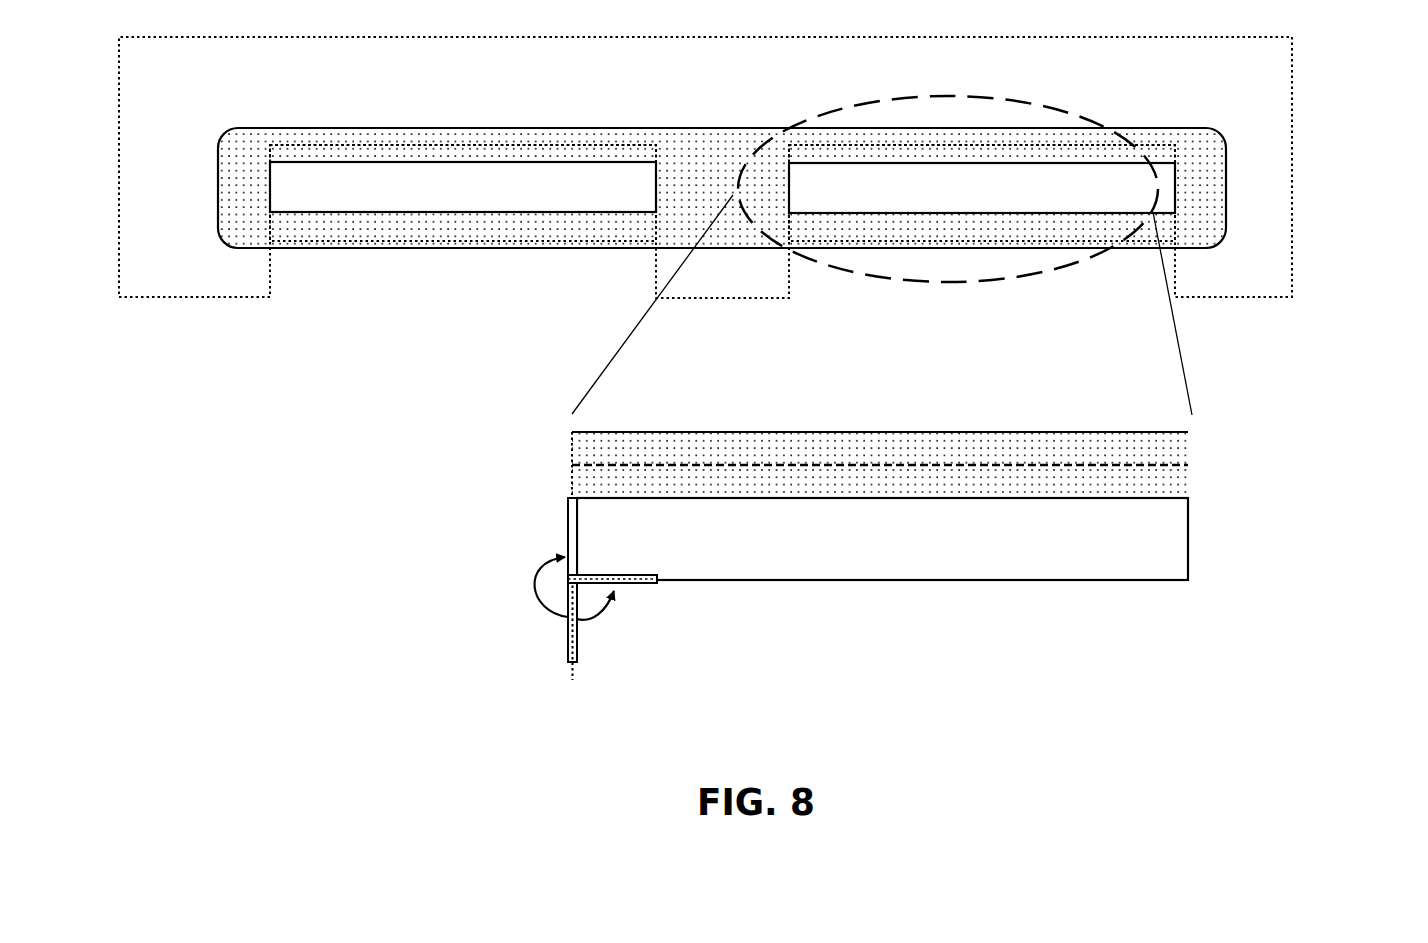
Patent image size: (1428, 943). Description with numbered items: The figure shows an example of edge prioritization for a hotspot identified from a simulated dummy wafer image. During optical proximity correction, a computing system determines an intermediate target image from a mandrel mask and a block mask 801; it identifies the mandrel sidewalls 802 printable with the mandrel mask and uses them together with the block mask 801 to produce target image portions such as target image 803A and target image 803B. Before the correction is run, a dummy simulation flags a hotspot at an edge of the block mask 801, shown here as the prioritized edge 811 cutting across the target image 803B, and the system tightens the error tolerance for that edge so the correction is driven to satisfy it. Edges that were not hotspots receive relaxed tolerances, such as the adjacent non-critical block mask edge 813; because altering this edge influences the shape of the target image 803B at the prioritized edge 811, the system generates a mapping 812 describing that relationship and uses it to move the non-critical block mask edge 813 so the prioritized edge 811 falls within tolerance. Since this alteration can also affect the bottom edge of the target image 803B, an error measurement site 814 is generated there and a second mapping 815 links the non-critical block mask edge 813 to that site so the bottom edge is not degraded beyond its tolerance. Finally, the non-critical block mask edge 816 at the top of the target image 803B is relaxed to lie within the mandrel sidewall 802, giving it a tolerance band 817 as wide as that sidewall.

The block mask 801 is at (705, 167).
The mandrel sidewalls 802 is at (435, 247).
The target image 803A is at (463, 187).
The target image 803B is at (882, 338).
The prioritized edge 811 is at (565, 513).
The mapping 812 is at (477, 587).
The non-critical block mask edge 813 is at (567, 630).
The error measurement site 814 is at (658, 582).
The mapping 815 is at (661, 617).
The non-critical block mask edge 816 is at (1198, 465).
The tolerance band 817 is at (555, 498).